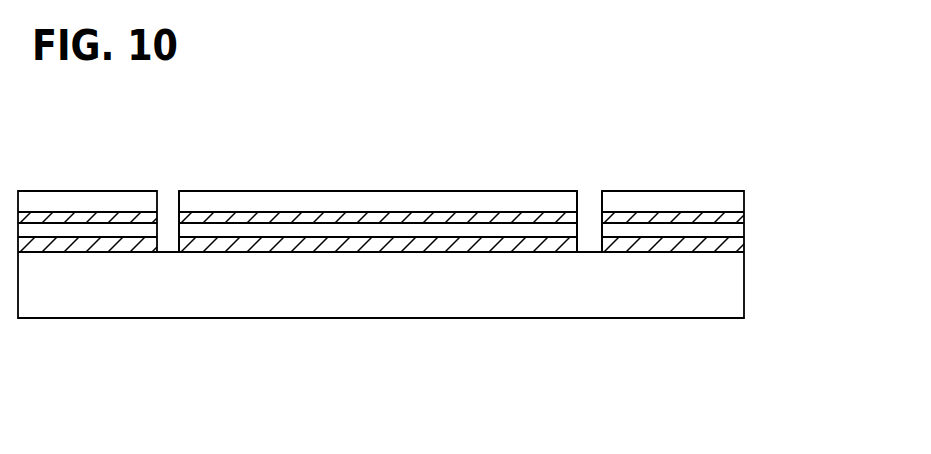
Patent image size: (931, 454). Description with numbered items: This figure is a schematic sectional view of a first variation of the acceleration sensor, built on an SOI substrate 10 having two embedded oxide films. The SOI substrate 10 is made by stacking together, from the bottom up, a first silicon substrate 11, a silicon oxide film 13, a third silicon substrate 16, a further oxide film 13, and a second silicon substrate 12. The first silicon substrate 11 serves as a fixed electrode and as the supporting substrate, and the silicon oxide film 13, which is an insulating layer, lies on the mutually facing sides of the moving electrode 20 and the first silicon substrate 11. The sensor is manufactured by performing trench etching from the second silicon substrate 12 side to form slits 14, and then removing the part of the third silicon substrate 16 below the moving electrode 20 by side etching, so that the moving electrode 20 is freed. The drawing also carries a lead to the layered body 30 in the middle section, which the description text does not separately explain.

The SOI substrate 10 is at (435, 234).
The first silicon substrate 11 is at (730, 302).
The second silicon substrate 12 is at (730, 202).
The silicon oxide film 13 is at (447, 217).
The slit 14 is at (587, 207).
The third silicon substrate 16 is at (735, 230).
The moving electrode 20 is at (306, 200).
The layered body 30 is at (382, 229).